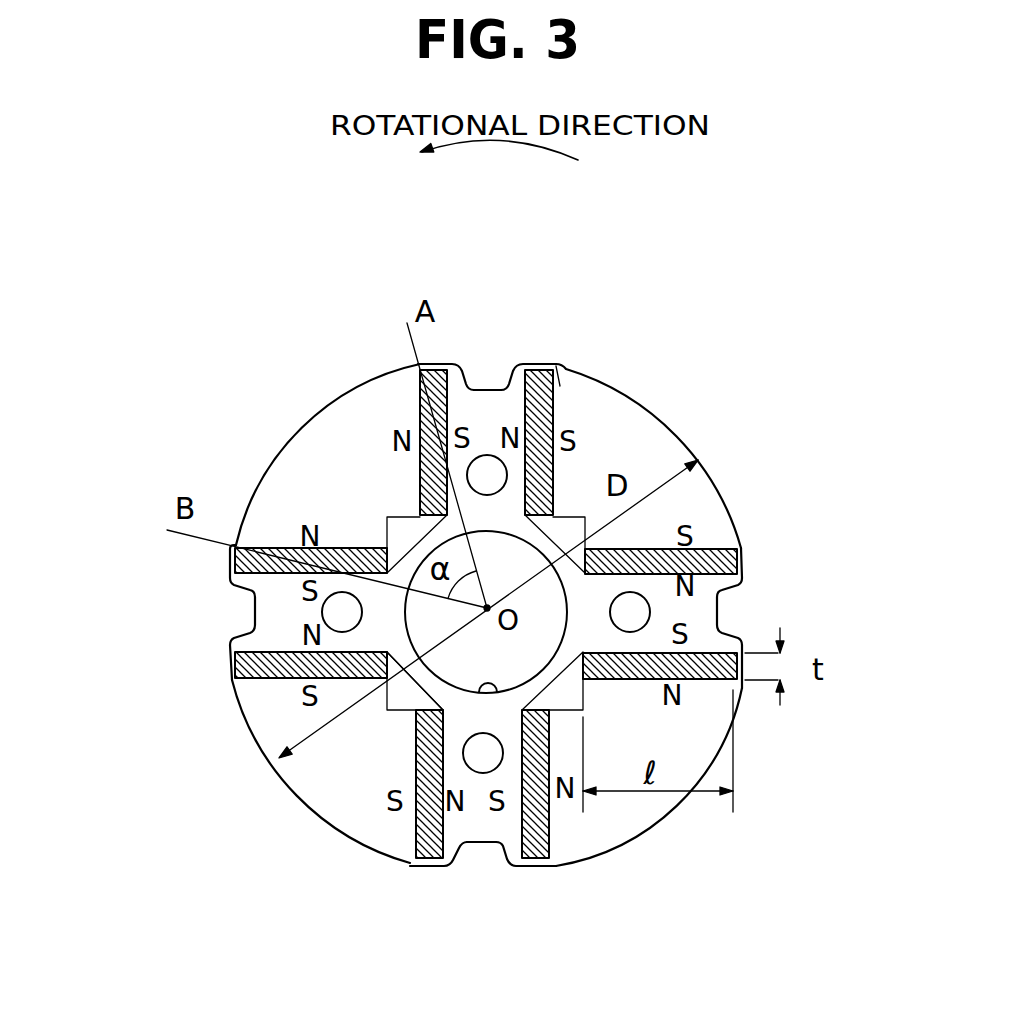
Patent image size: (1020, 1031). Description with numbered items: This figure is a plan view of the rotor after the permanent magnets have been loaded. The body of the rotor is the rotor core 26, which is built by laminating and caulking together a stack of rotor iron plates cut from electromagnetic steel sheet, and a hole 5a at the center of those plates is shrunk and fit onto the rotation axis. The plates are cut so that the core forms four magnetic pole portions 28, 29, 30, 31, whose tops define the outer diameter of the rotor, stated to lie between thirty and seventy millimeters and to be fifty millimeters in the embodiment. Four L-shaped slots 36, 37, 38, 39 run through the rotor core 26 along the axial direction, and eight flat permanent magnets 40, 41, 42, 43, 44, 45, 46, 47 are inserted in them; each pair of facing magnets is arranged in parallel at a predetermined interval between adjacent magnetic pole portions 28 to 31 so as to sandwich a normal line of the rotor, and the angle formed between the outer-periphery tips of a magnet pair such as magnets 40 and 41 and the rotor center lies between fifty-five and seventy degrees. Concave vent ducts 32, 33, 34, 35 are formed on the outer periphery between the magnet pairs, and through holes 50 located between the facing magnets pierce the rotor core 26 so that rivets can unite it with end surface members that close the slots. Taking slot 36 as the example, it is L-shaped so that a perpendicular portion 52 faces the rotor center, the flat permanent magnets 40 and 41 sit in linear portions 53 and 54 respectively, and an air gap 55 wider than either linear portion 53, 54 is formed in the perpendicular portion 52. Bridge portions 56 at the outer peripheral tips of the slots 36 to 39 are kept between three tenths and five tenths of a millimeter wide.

The hole 5a is at (507, 693).
The rotor core 26 is at (645, 403).
The magnetic pole portion 28 is at (588, 457).
The magnetic pole portion 29 is at (335, 477).
The magnetic pole portion 30 is at (326, 773).
The magnetic pole portion 31 is at (591, 748).
The concave vent duct 32 is at (483, 388).
The concave vent duct 33 is at (252, 600).
The concave vent duct 34 is at (475, 847).
The concave vent duct 35 is at (742, 597).
The L-shaped slot 36 is at (418, 430).
The L-shaped slot 37 is at (415, 818).
The L-shaped slot 38 is at (565, 865).
The L-shaped slot 39 is at (705, 549).
The flat permanent magnet 40 is at (419, 440).
The flat permanent magnet 41 is at (278, 547).
The flat permanent magnet 42 is at (263, 677).
The flat permanent magnet 43 is at (417, 770).
The flat permanent magnet 44 is at (553, 856).
The flat permanent magnet 45 is at (741, 690).
The flat permanent magnet 46 is at (700, 460).
The flat permanent magnet 47 is at (560, 385).
The through hole 50 is at (557, 398).
The perpendicular portion 52 is at (446, 640).
The linear portion 53 is at (457, 378).
The linear portion 54 is at (252, 627).
The air gap 55 is at (386, 522).
The bridge portion 56 is at (444, 364).